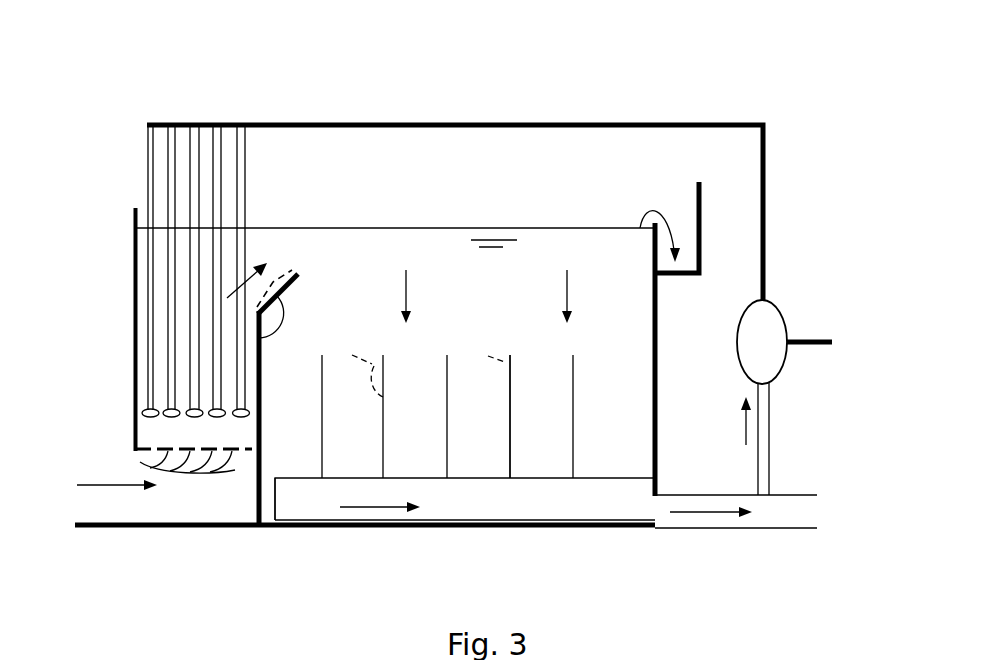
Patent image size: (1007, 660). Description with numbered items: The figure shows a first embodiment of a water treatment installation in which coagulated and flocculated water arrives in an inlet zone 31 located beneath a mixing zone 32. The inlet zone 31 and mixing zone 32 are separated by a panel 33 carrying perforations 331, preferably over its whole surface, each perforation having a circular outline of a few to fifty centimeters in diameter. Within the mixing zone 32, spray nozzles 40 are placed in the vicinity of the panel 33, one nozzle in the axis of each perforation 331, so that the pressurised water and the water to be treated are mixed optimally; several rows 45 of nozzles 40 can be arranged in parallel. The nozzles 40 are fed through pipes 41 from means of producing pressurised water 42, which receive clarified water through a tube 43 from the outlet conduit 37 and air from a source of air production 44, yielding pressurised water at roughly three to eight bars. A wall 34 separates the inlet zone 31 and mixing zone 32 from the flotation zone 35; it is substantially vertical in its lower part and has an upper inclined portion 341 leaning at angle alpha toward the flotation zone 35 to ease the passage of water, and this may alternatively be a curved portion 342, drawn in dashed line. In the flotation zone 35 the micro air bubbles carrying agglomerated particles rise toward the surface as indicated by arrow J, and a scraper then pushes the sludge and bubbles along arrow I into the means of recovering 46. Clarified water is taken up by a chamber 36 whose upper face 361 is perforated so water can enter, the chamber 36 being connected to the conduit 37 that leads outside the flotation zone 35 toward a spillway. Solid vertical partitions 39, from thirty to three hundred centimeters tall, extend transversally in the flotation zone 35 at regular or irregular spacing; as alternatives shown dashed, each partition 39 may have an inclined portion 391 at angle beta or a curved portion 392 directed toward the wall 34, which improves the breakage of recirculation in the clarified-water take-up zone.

The inlet zone 31 is at (143, 510).
The mixing zone 32 is at (160, 250).
The panel 33 is at (133, 420).
The perforations 331 is at (150, 467).
The wall 34 is at (255, 498).
The inclined portion 341 is at (298, 289).
The curved portion 342 is at (288, 272).
The flotation zone 35 is at (492, 277).
The chamber 36 is at (550, 500).
The upper face 361 is at (620, 463).
The conduit 37 is at (767, 530).
The vertical partitions 39 is at (383, 440).
The inclined portion 391 is at (295, 480).
The curved portion 392 is at (500, 363).
The spray nozzle 40 is at (152, 405).
The pipes 41 is at (200, 125).
The means of producing pressurised water 42 is at (755, 300).
The tube 43 is at (770, 450).
The source of air production 44 is at (806, 300).
The rows 45 is at (208, 143).
The means of recovering 46 is at (700, 197).